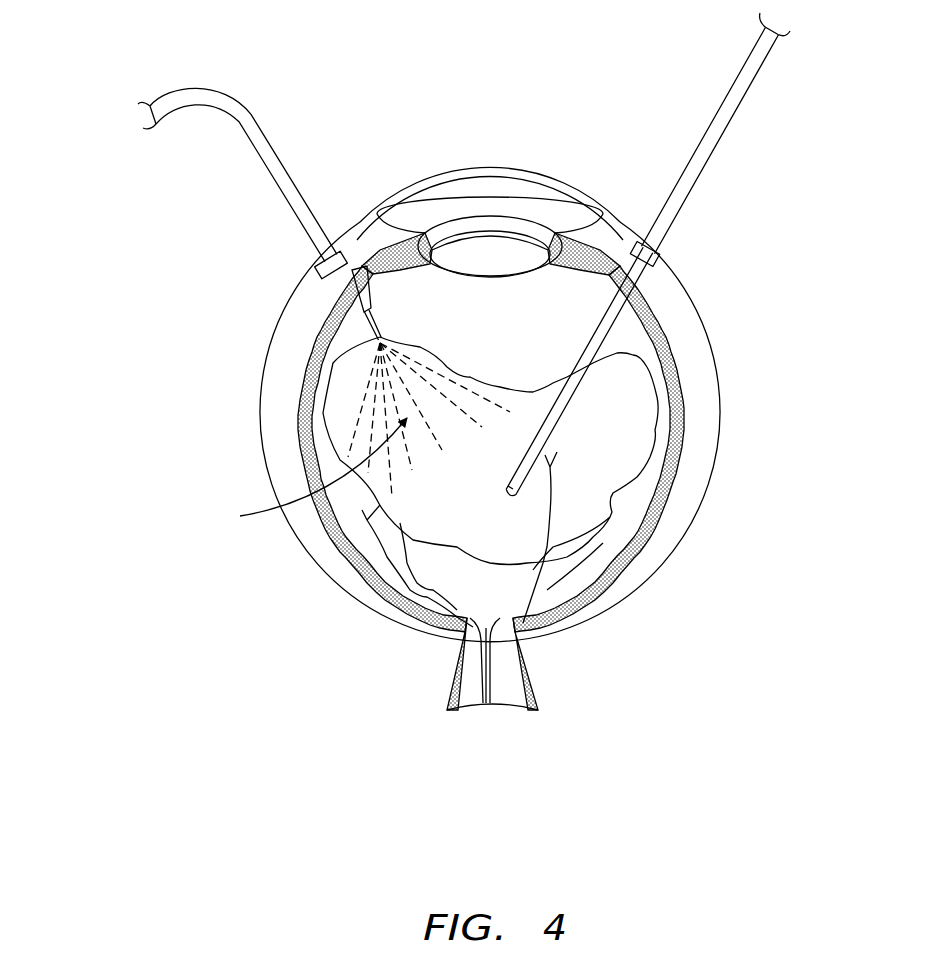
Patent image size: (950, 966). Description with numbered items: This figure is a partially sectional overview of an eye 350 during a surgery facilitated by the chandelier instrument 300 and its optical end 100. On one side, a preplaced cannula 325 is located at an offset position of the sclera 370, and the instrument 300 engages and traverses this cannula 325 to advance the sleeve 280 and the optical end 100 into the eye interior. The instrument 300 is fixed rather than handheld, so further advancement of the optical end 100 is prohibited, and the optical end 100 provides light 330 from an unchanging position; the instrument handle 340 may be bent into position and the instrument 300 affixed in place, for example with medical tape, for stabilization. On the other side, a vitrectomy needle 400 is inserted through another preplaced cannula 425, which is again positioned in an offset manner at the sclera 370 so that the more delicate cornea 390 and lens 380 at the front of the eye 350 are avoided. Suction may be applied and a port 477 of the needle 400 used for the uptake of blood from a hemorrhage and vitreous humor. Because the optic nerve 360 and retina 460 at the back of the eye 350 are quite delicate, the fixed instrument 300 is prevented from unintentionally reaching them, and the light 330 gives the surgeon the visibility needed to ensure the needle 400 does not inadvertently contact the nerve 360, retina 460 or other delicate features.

The optical end 100 is at (378, 336).
The sleeve 280 is at (362, 266).
The instrument 300 is at (252, 78).
The cannula 325 is at (316, 270).
The light 330 is at (295, 474).
The instrument handle 340 is at (168, 100).
The eye 350 is at (726, 246).
The optic nerve 360 is at (470, 688).
The sclera 370 is at (282, 352).
The lens 380 is at (463, 247).
The cornea 390 is at (486, 170).
The vitrectomy needle 400 is at (704, 120).
The cannula 425 is at (656, 264).
The retina 460 is at (622, 535).
The port 477 is at (503, 492).